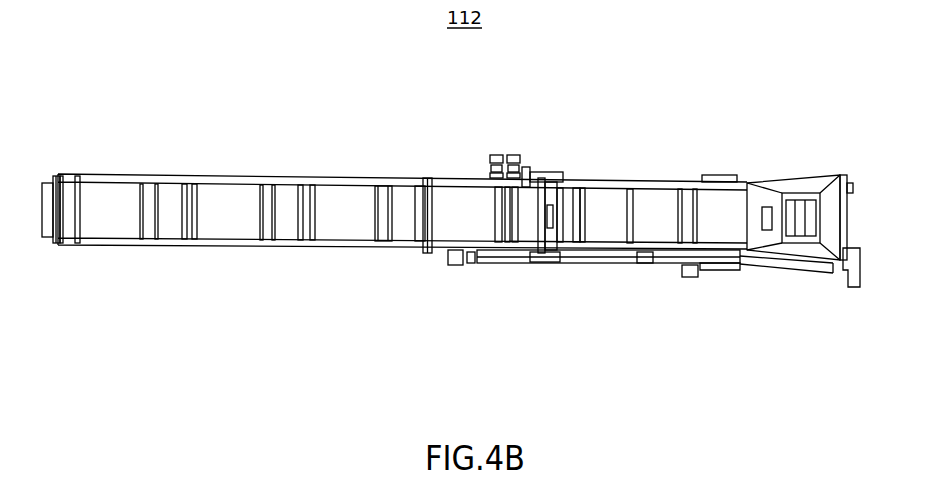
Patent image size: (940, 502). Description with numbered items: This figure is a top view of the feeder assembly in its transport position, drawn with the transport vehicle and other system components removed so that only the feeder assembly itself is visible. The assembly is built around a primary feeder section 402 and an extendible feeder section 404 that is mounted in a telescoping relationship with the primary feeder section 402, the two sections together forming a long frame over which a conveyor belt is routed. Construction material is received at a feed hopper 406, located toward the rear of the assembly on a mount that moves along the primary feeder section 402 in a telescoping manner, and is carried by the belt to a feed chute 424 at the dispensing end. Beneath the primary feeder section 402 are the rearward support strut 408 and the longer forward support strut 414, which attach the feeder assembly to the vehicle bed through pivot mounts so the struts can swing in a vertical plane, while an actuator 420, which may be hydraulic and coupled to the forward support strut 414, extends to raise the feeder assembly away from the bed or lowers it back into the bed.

The primary feeder section 402 is at (580, 180).
The extendible feeder section 404 is at (328, 193).
The feed hopper 406 is at (813, 192).
The rearward support strut 408 is at (773, 267).
The forward support strut 414 is at (653, 265).
The actuator 420 is at (512, 265).
The feed chute 424 is at (45, 180).